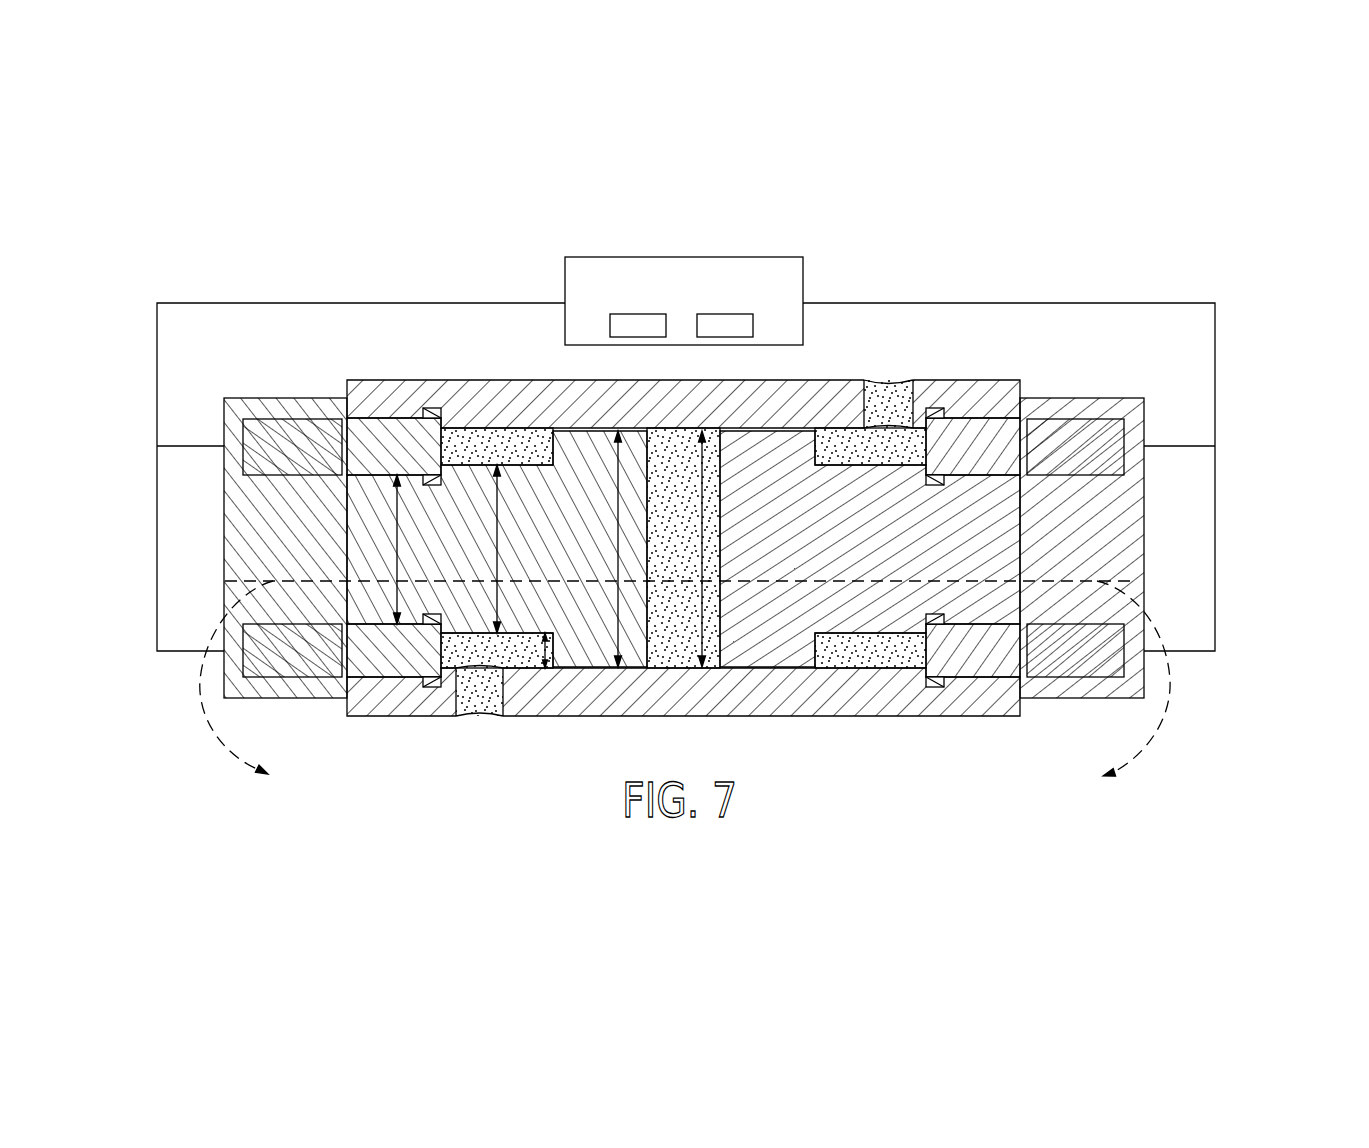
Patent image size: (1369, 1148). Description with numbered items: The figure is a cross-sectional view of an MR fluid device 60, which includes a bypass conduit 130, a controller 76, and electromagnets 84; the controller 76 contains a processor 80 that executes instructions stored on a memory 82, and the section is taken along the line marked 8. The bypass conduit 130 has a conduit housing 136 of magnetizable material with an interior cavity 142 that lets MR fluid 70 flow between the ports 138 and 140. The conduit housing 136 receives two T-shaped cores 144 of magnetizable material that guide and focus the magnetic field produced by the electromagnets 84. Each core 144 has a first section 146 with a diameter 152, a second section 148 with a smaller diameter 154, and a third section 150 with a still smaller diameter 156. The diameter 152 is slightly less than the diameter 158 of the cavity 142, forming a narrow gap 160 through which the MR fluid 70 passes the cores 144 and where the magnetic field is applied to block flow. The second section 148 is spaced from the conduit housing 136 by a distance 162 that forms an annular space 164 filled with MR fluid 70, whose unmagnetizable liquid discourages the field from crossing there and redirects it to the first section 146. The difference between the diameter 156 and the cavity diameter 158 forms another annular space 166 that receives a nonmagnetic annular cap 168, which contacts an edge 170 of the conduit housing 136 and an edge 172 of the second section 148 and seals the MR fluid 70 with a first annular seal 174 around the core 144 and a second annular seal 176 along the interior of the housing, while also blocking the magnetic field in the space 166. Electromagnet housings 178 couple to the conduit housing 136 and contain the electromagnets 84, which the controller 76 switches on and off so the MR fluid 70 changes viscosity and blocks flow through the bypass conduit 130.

The MR fluid device 60 is at (1049, 216).
The controller 76 is at (684, 257).
The processor 80 is at (626, 337).
The memory 82 is at (724, 337).
The bypass conduit 130 is at (1238, 695).
The section line 8- 8 is at (685, 686).
The gap 160 is at (843, 380).
The conduit housing 136 is at (743, 698).
The annular space 166 is at (370, 682).
The port 138 is at (903, 395).
The port 140 is at (461, 700).
The electromagnet housing 178 is at (243, 565).
The electromagnet 84 is at (302, 660).
The third section 150 is at (367, 527).
The core 144 is at (597, 443).
The annular cap 168 is at (395, 648).
The interior cavity 142 is at (497, 447).
The MR fluid 70 is at (673, 645).
The second annular seal 176 is at (947, 408).
The first annular seal 174 is at (940, 483).
The edge 170 is at (940, 688).
The edge 172 is at (917, 623).
The diameter 156 is at (400, 543).
The diameter 154 is at (500, 541).
The diameter 152 is at (616, 512).
The diameter 158 is at (703, 545).
The distance 162 is at (580, 650).
The first section 146 is at (552, 650).
The second section 148 is at (537, 613).
The annular space 164 is at (495, 655).